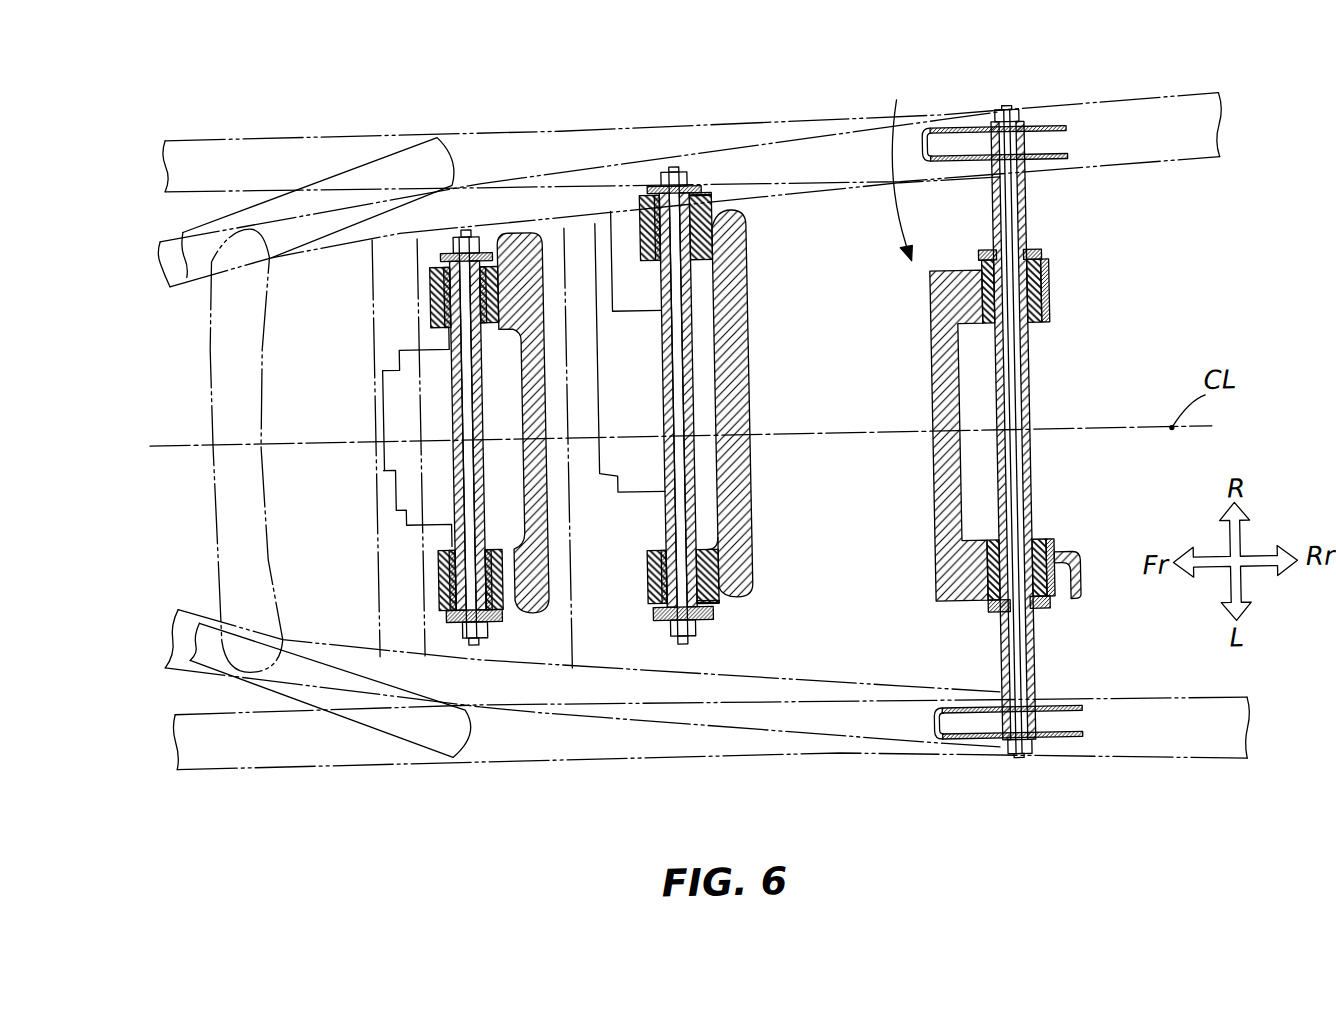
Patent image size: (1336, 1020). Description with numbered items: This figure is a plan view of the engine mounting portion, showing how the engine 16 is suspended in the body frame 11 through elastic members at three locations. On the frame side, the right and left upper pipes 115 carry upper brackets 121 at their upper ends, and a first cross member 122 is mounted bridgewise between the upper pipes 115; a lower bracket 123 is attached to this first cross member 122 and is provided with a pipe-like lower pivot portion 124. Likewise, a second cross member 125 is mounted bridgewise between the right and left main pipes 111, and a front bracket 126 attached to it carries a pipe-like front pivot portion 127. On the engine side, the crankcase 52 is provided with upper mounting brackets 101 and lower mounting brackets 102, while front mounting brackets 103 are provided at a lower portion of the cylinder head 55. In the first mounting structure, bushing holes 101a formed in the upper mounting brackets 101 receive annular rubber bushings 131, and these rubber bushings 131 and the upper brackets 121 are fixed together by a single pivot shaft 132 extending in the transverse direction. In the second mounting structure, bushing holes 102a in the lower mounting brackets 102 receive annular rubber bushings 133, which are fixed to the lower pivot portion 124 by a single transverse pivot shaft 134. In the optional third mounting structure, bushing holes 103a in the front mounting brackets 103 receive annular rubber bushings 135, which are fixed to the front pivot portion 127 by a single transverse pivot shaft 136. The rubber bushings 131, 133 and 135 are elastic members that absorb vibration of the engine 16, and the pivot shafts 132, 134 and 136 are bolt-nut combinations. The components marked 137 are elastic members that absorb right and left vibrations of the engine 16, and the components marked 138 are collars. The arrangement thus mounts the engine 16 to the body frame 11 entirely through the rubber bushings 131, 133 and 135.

The body frame 11 is at (265, 127).
The engine 16 is at (897, 162).
The crankcase 52 is at (737, 590).
The cylinder head 55 is at (528, 610).
The upper mounting bracket 101 is at (1053, 306).
The bushing hole 101a is at (1053, 288).
The lower mounting bracket 102 is at (644, 215).
The bushing hole 102a is at (716, 240).
The front mounting bracket 103 is at (435, 280).
The bushing hole 103a is at (446, 291).
The main pipe 111 is at (328, 170).
The upper pipe 115 is at (829, 141).
The upper bracket 121 is at (1069, 130).
The first cross member 122 is at (568, 641).
The lower bracket 123 is at (670, 362).
The lower pivot portion 124 is at (695, 378).
The second cross member 125 is at (373, 356).
The front bracket 126 is at (401, 404).
The front pivot portion 127 is at (440, 450).
The rubber bushing 131 is at (1045, 263).
The pivot shaft 132 is at (1034, 214).
The rubber bushing 133 is at (716, 249).
The pivot shaft 134 is at (680, 475).
The rubber bushing 135 is at (452, 318).
The pivot shaft 136 is at (439, 485).
The elastic member 137 is at (452, 249).
The collar 138 is at (1032, 184).